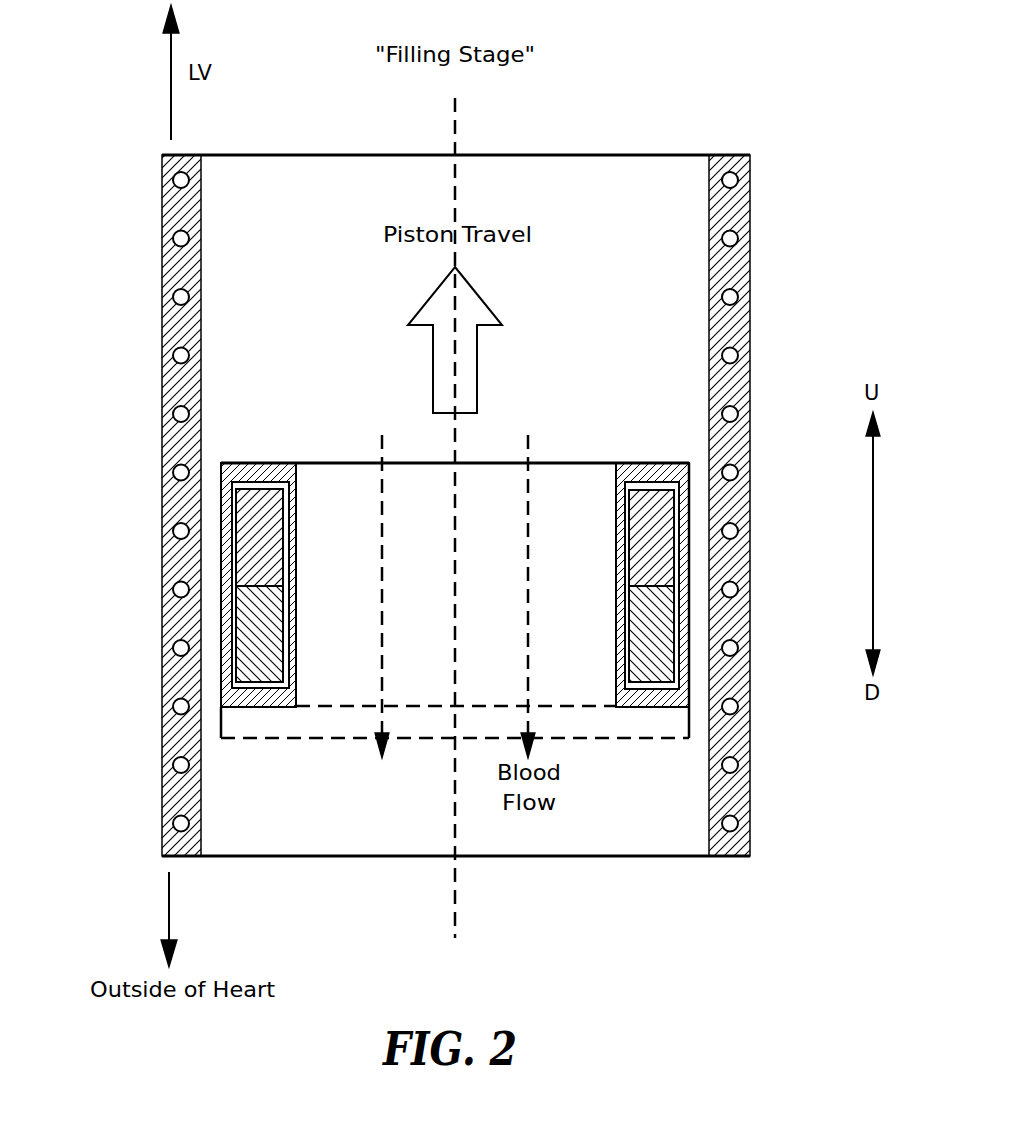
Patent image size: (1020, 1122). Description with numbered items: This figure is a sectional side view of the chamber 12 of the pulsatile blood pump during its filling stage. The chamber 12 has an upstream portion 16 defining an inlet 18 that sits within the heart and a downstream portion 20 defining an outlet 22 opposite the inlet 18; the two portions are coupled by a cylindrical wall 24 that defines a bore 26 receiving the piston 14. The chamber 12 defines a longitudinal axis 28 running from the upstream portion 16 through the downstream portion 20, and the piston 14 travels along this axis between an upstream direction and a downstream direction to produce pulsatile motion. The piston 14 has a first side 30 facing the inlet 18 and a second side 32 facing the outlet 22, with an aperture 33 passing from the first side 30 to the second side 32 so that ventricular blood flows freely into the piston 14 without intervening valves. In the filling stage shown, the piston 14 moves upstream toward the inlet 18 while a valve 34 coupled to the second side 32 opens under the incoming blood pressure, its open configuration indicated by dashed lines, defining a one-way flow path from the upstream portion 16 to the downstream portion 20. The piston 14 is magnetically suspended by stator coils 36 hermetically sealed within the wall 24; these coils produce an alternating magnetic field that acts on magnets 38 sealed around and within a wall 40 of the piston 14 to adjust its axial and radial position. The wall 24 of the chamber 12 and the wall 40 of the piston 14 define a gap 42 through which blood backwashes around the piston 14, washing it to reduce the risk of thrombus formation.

The chamber 12 is at (449, 512).
The piston 14 is at (445, 575).
The upstream portion 16 is at (163, 247).
The inlet 18 is at (339, 153).
The downstream portion 20 is at (163, 740).
The outlet 22 is at (557, 857).
The wall 24 is at (167, 200).
The bore 26 is at (620, 168).
The longitudinal axis 28 is at (456, 122).
The first side 30 is at (435, 594).
The second side 32 is at (317, 708).
The aperture 33 is at (331, 460).
The valve 34 is at (643, 740).
The stator coils 36 is at (172, 320).
The magnets 38 is at (436, 569).
The wall 40 is at (218, 470).
The gap 42 is at (212, 562).